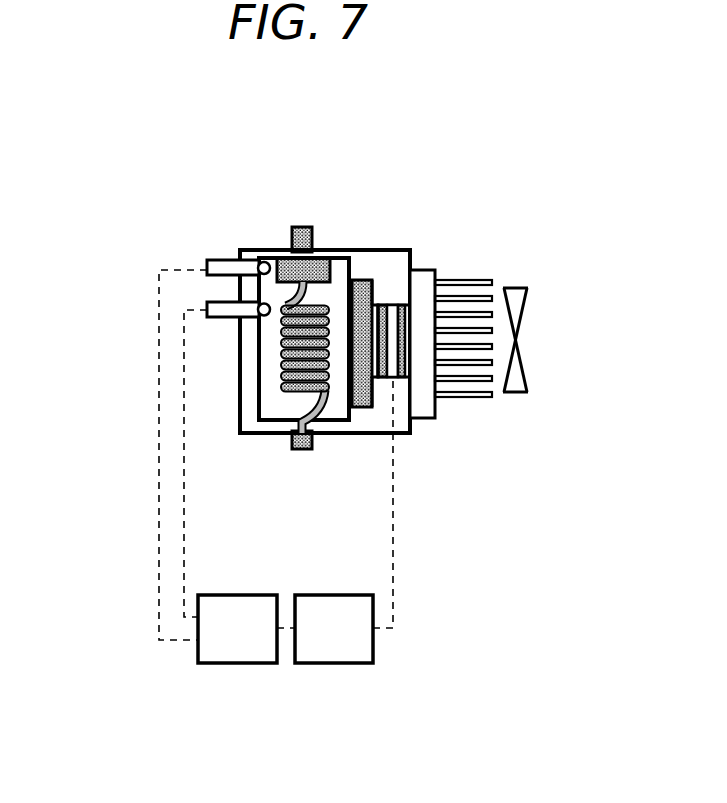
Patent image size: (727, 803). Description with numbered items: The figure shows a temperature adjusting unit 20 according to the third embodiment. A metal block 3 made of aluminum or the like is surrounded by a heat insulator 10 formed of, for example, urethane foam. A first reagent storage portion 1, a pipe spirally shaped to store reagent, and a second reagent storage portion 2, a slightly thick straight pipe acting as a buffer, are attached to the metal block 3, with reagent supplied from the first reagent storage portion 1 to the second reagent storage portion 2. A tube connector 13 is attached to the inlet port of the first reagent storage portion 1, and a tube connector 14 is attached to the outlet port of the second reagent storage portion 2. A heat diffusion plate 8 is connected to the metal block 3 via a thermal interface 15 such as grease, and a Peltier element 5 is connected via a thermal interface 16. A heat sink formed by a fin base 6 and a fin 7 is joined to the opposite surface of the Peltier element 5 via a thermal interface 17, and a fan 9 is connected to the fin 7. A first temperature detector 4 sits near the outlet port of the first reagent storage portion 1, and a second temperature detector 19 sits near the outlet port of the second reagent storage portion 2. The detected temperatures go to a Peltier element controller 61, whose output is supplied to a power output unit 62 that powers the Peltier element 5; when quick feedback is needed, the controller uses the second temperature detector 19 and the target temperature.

The temperature adjusting unit 20 is at (65, 74).
The heat insulator 10 is at (308, 270).
The metal block 3 is at (195, 333).
The tube connector 14 is at (275, 166).
The tube connector 13 is at (256, 487).
The second reagent storage portion 2 is at (328, 177).
The first reagent storage portion 1 is at (185, 362).
The second temperature detector 19 is at (216, 194).
The first temperature detector 4 is at (204, 251).
The thermal interface 15 is at (376, 266).
The heat diffusion plate 8 is at (339, 421).
The Peltier element 5 is at (400, 424).
The thermal interface 16 is at (373, 424).
The thermal interface 17 is at (403, 271).
The fin base 6 is at (474, 384).
The fin 7 is at (495, 307).
The fan 9 is at (551, 340).
The Peltier element controller 61 is at (261, 684).
The power output unit 62 is at (356, 684).